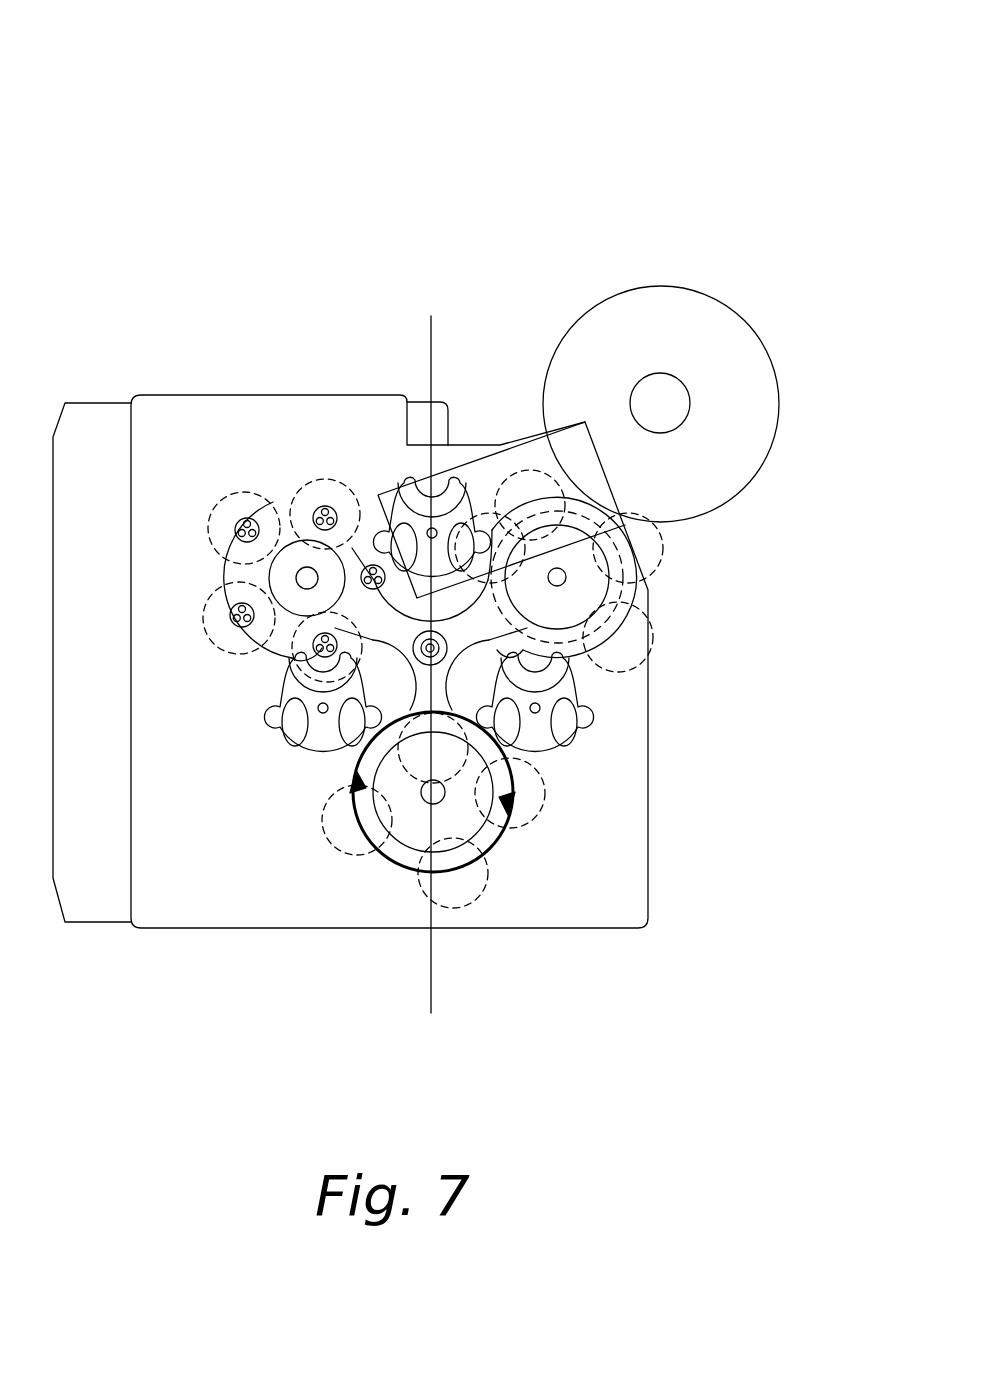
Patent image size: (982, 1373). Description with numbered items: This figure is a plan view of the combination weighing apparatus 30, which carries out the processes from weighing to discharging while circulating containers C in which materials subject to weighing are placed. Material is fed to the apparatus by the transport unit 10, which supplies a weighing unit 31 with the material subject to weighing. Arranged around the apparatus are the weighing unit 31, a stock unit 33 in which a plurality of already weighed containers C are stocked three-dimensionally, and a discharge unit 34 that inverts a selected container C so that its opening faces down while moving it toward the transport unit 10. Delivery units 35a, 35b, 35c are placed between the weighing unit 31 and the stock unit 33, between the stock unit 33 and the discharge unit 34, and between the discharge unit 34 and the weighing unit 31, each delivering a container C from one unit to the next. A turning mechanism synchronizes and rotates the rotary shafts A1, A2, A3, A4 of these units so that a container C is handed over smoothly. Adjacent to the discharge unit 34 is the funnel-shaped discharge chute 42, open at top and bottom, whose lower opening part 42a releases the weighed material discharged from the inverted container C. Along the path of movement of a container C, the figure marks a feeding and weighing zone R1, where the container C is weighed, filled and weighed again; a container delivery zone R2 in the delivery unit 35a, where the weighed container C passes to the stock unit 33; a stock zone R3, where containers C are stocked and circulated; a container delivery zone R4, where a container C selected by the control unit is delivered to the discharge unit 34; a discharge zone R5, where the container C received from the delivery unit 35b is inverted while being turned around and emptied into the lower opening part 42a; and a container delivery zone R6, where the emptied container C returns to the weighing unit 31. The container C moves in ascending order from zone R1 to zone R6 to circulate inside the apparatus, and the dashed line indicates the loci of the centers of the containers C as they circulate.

The combination weighing apparatus 30 is at (567, 148).
The weighing unit 31 is at (292, 448).
The stock unit 33 is at (510, 910).
The discharge unit 34 is at (683, 620).
The transport unit 10 is at (520, 432).
The discharge chute 42 is at (690, 322).
The lower opening part 42a is at (662, 404).
The delivery unit 35a is at (318, 745).
The delivery unit 35b is at (573, 745).
The delivery unit 35c is at (412, 475).
The rotary shaft A1 is at (298, 578).
The rotary shaft A2 is at (423, 802).
The rotary shaft A3 is at (560, 578).
The rotary shaft A4 is at (412, 478).
The feeding and weighing zone R1 is at (268, 497).
The container delivery zone R2 is at (300, 692).
The stock zone R3 is at (493, 838).
The container delivery zone R4 is at (555, 670).
The discharge zone R5 is at (650, 545).
The container delivery zone R6 is at (474, 545).
The container C is at (205, 650).